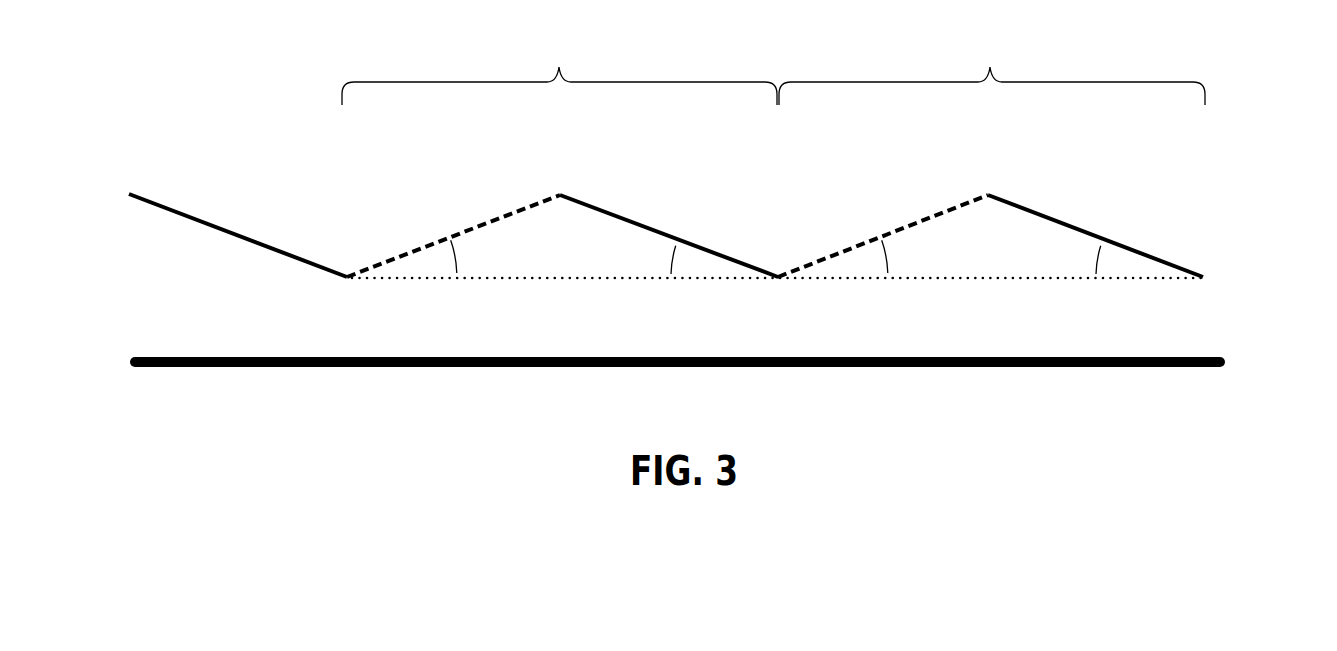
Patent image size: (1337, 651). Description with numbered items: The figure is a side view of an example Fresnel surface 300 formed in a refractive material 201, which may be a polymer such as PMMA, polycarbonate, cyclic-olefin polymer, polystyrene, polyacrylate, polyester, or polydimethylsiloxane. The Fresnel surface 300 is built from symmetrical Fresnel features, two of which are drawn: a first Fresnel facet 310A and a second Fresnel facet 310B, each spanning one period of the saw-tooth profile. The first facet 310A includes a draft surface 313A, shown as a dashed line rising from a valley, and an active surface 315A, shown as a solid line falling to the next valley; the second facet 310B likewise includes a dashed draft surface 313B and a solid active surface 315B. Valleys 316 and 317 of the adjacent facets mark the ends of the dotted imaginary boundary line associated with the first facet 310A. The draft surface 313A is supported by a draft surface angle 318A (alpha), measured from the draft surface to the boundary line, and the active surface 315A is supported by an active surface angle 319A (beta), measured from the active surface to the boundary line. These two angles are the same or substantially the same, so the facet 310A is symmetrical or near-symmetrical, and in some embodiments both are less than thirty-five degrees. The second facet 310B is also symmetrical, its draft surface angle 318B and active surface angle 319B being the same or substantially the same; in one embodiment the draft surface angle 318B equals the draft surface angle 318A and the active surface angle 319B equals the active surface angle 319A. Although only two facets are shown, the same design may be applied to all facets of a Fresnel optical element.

The Fresnel surface 300 is at (1252, 205).
The refractive material 201 is at (215, 310).
The first Fresnel facet 310A is at (559, 66).
The second Fresnel facet 310B is at (992, 66).
The draft surface 313A is at (441, 220).
The draft surface 313B is at (905, 200).
The active surface 315A is at (646, 207).
The active surface 315B is at (1125, 225).
The valley 316 is at (342, 261).
The valley 317 is at (782, 260).
The draft surface angle 318A is at (480, 252).
The draft surface angle 318B is at (915, 255).
The active surface angle 319A is at (642, 251).
The active surface angle 319B is at (1077, 254).